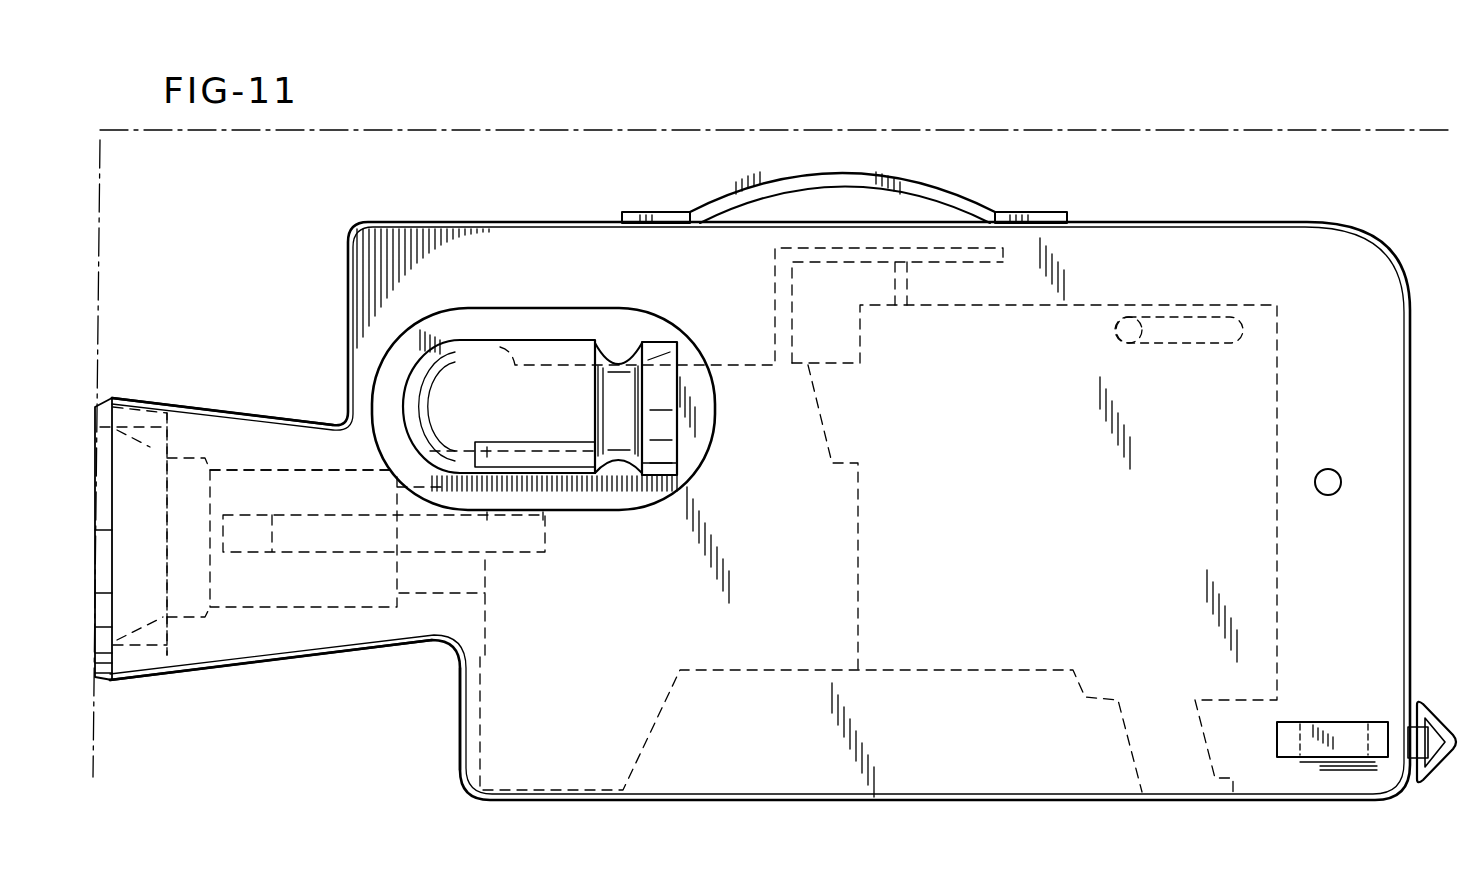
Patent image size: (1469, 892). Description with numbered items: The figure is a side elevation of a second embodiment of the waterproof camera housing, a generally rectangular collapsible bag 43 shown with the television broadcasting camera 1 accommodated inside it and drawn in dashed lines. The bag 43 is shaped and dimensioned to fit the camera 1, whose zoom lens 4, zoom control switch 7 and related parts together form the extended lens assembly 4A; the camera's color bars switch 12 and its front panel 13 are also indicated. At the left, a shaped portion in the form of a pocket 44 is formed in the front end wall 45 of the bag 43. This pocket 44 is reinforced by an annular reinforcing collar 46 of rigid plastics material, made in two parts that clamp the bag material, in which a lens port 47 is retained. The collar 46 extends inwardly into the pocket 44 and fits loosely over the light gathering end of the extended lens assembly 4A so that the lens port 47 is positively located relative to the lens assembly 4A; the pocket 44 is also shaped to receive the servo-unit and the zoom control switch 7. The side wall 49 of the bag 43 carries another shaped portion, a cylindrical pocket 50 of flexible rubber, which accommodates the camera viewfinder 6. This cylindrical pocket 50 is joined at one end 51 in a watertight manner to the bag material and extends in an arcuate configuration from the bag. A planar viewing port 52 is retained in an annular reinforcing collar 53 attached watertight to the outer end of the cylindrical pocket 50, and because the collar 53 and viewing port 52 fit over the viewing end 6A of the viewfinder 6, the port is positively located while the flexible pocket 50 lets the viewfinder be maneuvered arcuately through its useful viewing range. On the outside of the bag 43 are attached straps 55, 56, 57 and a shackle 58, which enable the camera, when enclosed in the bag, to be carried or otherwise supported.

The television broadcasting camera 1 is at (722, 676).
The zoom lens 4 is at (318, 604).
The extended lens assembly 4A is at (262, 445).
The viewfinder 6 is at (560, 363).
The viewing end 6A is at (678, 448).
The zoom control switch 7 is at (335, 460).
The color bars switch 12 is at (120, 772).
The front panel 13 is at (1450, 165).
The collapsible bag 43 is at (448, 771).
The pocket 44 is at (222, 672).
The front end wall 45 is at (348, 300).
The annular reinforcing collar 46 is at (105, 400).
The lens port 47 is at (105, 475).
The side wall 49 is at (980, 523).
The cylindrical pocket 50 is at (538, 340).
The end 51 is at (705, 453).
The viewing port 52 is at (677, 400).
The annular reinforcing collar 53 is at (680, 363).
The strap 55 is at (988, 206).
The strap 56 is at (405, 555).
The strap 57 is at (1328, 720).
The shackle 58 is at (1433, 703).